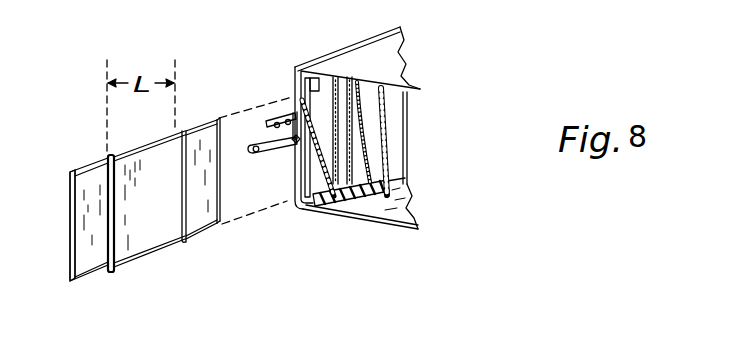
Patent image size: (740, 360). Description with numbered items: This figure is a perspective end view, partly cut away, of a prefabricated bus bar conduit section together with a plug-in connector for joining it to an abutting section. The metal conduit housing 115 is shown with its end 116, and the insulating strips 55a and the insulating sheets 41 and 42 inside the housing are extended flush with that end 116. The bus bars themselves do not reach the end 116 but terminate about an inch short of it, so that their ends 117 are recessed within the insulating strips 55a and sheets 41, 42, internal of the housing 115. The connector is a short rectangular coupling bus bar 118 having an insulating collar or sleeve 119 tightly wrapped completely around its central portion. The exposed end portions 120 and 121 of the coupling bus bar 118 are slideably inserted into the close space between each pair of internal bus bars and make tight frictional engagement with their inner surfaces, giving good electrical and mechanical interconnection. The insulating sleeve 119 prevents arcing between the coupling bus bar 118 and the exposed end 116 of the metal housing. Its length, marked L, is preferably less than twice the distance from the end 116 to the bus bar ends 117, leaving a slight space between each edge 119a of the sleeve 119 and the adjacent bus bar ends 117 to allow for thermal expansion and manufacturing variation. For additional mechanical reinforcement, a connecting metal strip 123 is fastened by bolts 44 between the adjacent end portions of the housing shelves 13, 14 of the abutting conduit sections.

The housing shelf 13 is at (272, 128).
The housing shelf 14 is at (258, 150).
The insulating sheet 41 is at (318, 88).
The insulating sheet 42 is at (381, 96).
The bolt 44 is at (296, 84).
The insulating strip 55a is at (299, 77).
The conduit housing 115 is at (395, 53).
The end of conduit section 116 is at (343, 216).
The end of bus bar 117 is at (338, 155).
The coupling bus bar 118 is at (96, 264).
The insulating sleeve 119 is at (147, 242).
The edge of insulating sleeve 119a is at (113, 199).
The exposed end portion of coupling bus bar 120 is at (221, 224).
The exposed end portion of coupling bus bar 121 is at (85, 249).
The connecting metal strip 123 is at (277, 150).